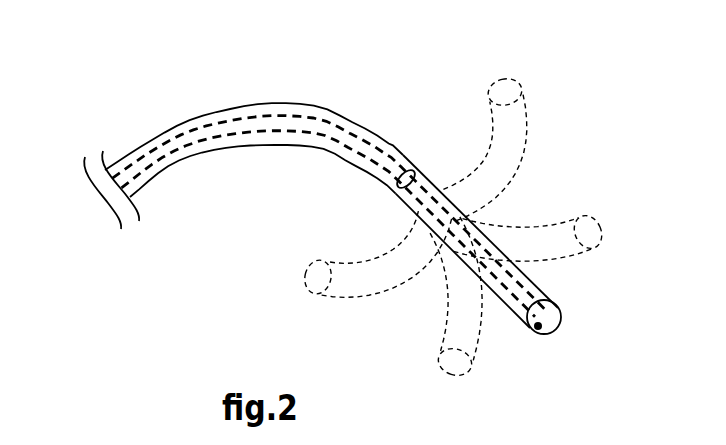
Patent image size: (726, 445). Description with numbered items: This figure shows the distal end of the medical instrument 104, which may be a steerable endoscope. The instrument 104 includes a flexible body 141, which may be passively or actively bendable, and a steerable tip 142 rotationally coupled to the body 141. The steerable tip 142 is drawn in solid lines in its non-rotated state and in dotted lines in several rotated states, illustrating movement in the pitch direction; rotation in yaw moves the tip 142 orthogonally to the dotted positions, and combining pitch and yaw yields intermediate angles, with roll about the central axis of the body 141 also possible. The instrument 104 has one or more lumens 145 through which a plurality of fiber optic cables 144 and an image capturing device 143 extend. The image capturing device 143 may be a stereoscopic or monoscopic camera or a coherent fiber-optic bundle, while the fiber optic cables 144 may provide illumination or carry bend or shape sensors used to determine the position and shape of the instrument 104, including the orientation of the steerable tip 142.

The medical instrument 104 is at (278, 44).
The flexible body 141 is at (185, 122).
The steerable tip 142 is at (541, 289).
The image capturing device 143 is at (541, 332).
The fiber optic cables 144 is at (349, 132).
The lumens 145 is at (572, 329).